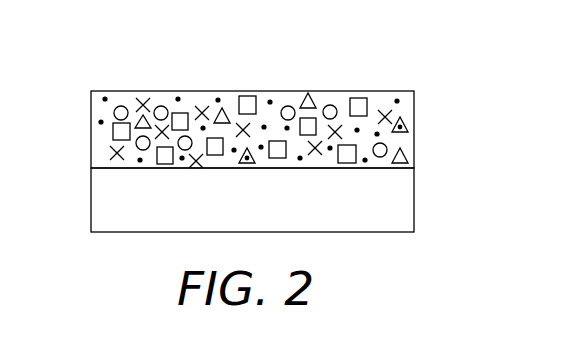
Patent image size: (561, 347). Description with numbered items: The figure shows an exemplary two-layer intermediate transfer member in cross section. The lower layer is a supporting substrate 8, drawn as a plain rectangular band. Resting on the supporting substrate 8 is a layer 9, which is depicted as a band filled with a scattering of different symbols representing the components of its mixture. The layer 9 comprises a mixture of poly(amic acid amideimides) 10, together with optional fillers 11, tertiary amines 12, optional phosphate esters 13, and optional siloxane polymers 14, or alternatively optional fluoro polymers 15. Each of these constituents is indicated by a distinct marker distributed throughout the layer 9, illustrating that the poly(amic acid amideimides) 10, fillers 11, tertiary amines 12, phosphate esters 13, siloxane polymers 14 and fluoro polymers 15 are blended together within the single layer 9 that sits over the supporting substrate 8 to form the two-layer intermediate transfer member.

The supporting substrate 8 is at (414, 203).
The layer 9 is at (414, 103).
The poly(amic acid amideimides) 10 is at (387, 148).
The fillers 11 is at (249, 96).
The tertiary amines 12 is at (111, 153).
The phosphate esters 13 is at (218, 98).
The siloxane polymers 14 is at (312, 95).
The fluoro polymers 15 is at (408, 122).